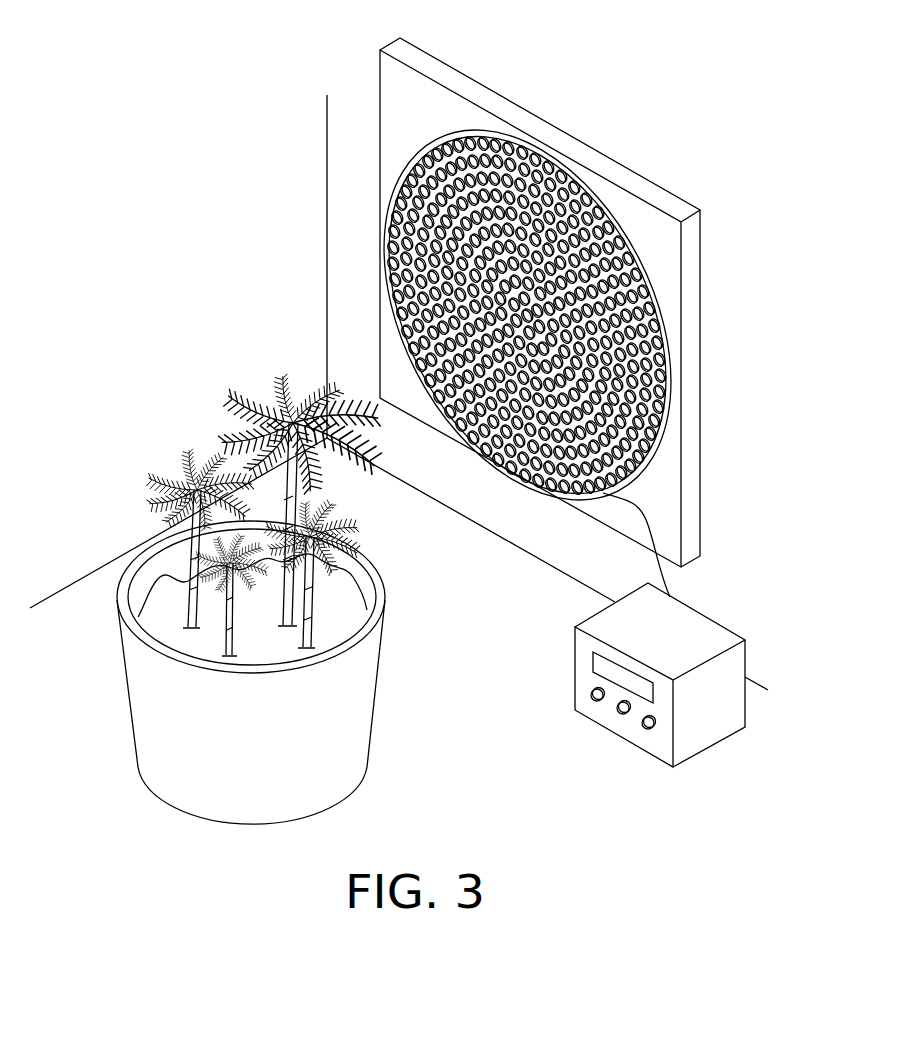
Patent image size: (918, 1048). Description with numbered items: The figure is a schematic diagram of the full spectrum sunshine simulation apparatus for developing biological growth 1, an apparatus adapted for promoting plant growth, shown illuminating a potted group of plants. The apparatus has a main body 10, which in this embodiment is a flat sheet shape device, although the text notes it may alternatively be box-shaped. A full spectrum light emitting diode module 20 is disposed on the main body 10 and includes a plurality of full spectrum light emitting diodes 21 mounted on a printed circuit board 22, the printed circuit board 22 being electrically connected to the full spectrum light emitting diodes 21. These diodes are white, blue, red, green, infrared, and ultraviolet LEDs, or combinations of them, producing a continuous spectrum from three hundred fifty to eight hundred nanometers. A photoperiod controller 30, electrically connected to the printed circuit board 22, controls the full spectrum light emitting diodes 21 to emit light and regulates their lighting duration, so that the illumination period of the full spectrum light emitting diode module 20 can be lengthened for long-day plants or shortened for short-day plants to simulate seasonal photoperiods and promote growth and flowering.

The full spectrum sunshine simulation apparatus for developing biological growth 1 is at (671, 35).
The main body 10 is at (703, 248).
The full spectrum light emitting diode module 20 is at (668, 333).
The full spectrum light emitting diodes 21 is at (653, 435).
The printed circuit board 22 is at (667, 405).
The photoperiod controller 30 is at (735, 628).